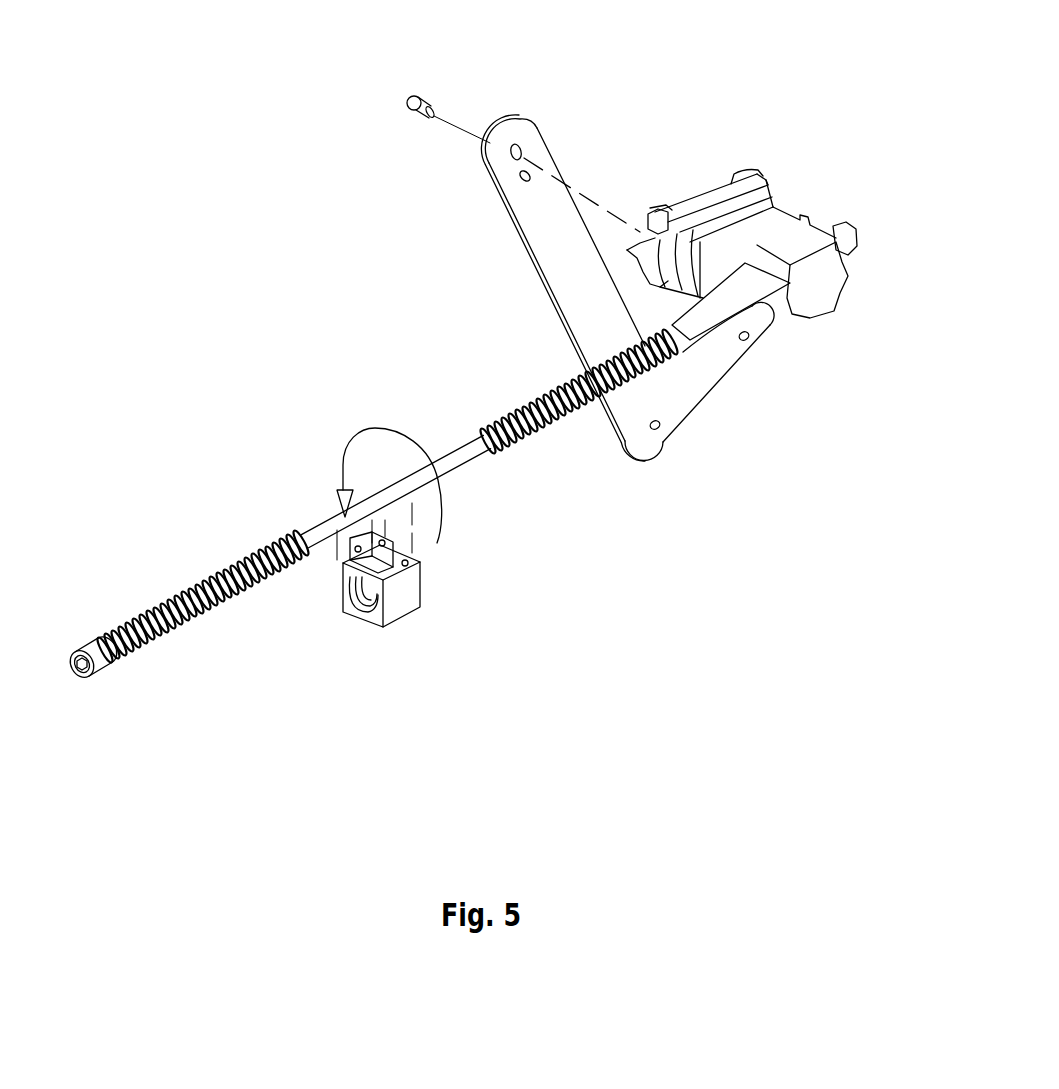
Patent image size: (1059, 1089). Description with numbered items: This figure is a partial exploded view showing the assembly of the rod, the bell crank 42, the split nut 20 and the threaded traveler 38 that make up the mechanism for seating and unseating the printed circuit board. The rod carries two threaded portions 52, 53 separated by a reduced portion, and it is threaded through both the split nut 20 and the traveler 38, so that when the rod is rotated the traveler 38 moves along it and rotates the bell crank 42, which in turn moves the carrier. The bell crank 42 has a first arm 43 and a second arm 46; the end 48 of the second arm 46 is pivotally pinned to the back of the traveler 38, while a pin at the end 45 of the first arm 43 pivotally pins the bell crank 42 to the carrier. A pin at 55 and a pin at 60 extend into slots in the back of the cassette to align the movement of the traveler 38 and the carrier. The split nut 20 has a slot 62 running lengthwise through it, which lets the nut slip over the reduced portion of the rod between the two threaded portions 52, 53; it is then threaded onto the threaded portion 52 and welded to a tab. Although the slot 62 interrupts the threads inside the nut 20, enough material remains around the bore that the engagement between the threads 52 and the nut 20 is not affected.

The split nut 20 is at (402, 602).
The traveler 38 is at (813, 288).
The bell crank 42 is at (552, 298).
The first arm 43 is at (700, 388).
The pivot end of first arm 45 is at (748, 340).
The second arm 46 is at (542, 223).
The end of second arm 48 is at (505, 128).
The threaded portion 52 is at (163, 643).
The threaded portion 53 is at (530, 437).
The pin 55 is at (659, 429).
The pin 60 is at (520, 180).
The slot 62 is at (377, 565).